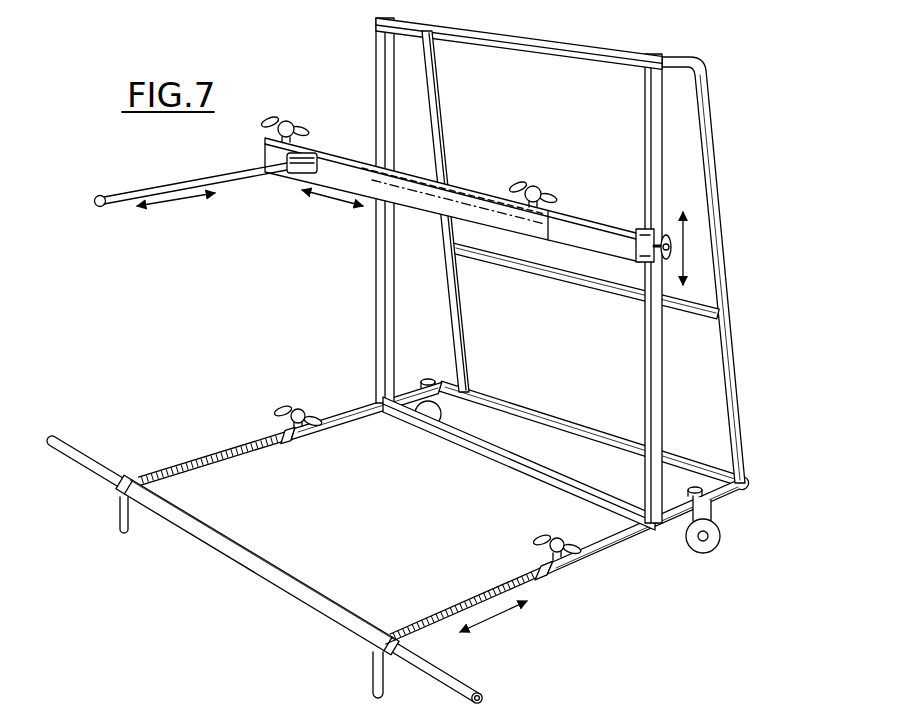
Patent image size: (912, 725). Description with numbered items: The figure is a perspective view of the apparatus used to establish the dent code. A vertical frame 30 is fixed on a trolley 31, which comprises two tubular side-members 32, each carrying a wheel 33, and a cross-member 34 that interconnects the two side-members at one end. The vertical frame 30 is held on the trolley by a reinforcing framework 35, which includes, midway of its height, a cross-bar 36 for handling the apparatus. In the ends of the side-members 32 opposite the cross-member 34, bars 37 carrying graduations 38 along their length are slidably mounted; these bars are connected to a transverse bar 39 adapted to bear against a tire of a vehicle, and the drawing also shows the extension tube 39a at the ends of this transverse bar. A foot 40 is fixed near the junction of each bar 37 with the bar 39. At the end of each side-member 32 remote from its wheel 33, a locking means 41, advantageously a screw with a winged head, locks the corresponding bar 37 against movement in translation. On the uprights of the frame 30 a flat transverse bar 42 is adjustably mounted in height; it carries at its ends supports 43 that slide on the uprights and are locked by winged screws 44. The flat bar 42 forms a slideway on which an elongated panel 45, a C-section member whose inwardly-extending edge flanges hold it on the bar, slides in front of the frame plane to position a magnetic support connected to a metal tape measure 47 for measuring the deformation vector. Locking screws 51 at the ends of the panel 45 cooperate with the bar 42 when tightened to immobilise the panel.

The vertical frame 30 is at (376, 100).
The trolley 31 is at (620, 556).
The tubular side-member 32 is at (638, 543).
The wheel 33 is at (720, 542).
The cross-member 34 is at (605, 432).
The reinforcing framework 35 is at (714, 258).
The cross-bar 36 is at (550, 277).
The bar 37 is at (243, 458).
The graduations 38 is at (203, 456).
The transverse bar 39 is at (193, 537).
The extension tube 39a is at (472, 684).
The foot 40 is at (373, 672).
The locking means 41 is at (298, 409).
The flat transverse bar 42 is at (587, 232).
The support 43 is at (656, 263).
The winged screw 44 is at (674, 247).
The elongated panel 45 is at (398, 189).
The metal tape measure 47 is at (250, 175).
The locking screw 51 is at (287, 123).